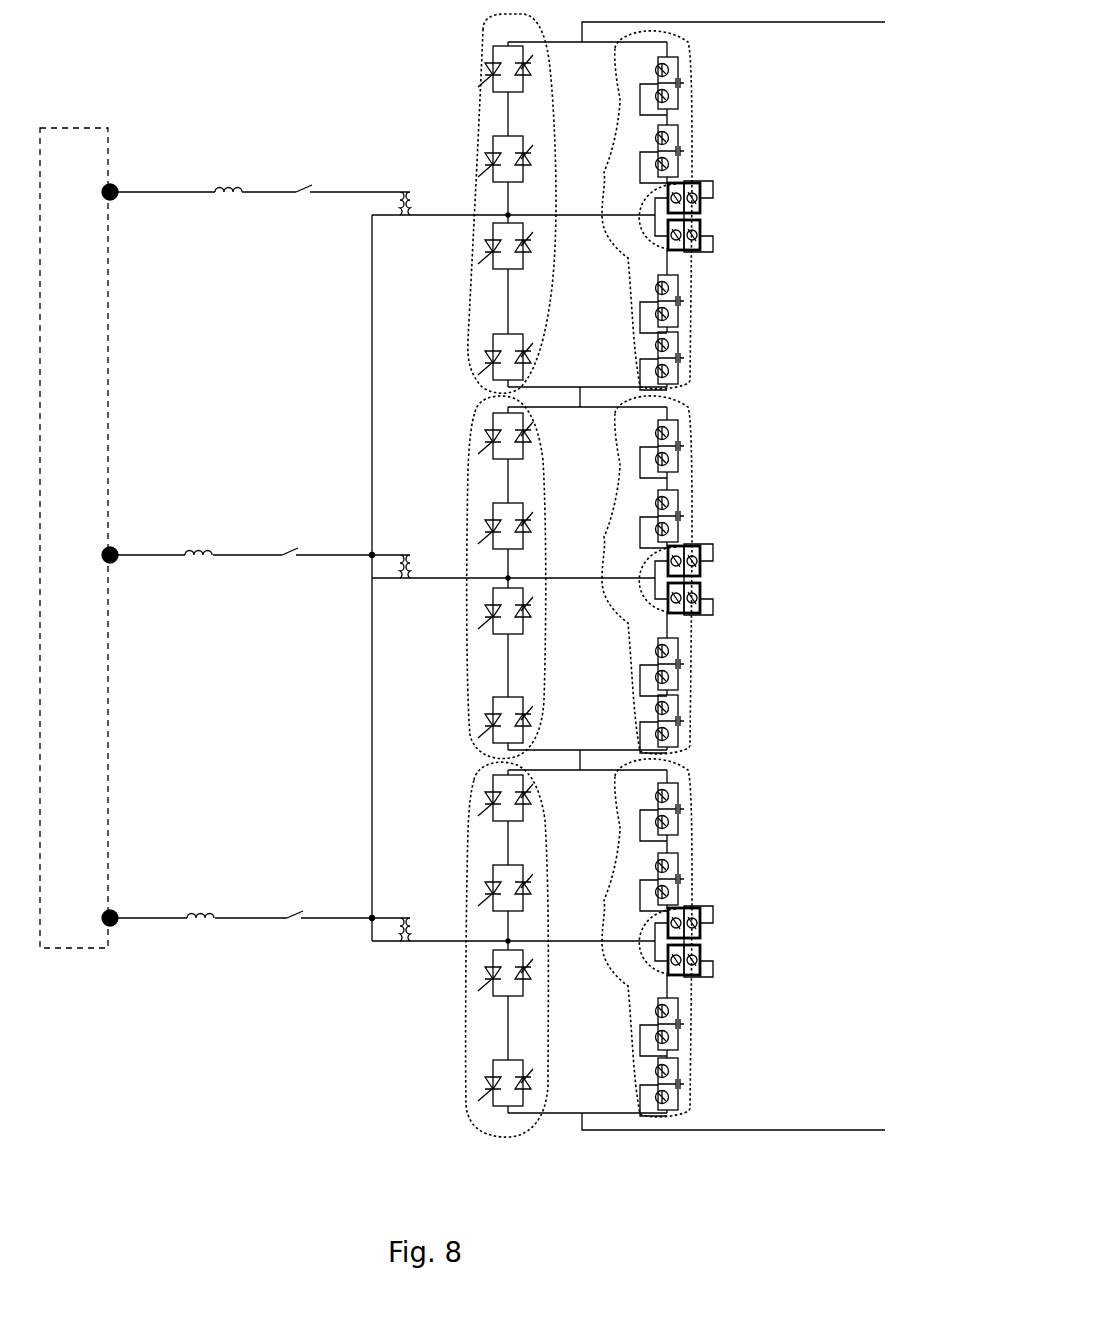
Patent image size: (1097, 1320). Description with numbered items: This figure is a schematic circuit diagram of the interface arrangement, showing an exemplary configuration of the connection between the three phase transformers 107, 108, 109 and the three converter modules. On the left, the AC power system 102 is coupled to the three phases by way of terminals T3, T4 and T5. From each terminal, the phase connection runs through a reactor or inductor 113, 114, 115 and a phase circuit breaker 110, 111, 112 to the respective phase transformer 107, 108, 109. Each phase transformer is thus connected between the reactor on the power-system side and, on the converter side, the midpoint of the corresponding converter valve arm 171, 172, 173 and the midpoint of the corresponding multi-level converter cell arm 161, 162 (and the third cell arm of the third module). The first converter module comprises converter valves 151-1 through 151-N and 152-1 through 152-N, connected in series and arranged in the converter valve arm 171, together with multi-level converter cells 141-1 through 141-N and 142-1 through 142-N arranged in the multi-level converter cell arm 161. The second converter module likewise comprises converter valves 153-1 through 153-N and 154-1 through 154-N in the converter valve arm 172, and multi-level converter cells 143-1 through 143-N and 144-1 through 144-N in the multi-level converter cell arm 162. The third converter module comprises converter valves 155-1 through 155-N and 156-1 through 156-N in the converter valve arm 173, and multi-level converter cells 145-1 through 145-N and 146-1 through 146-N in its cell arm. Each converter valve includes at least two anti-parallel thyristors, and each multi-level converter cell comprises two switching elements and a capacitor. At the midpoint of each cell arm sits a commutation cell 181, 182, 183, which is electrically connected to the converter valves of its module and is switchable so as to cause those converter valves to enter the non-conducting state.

The AC power system 102 is at (75, 128).
The phase transformer 107 is at (407, 186).
The phase transformer 108 is at (402, 550).
The phase transformer 109 is at (405, 912).
The phase circuit breaker 110 is at (307, 175).
The phase circuit breaker 111 is at (302, 539).
The phase circuit breaker 112 is at (308, 900).
The reactor or inductor 113 is at (228, 175).
The reactor or inductor 114 is at (203, 539).
The reactor or inductor 115 is at (205, 900).
The multi-level converter cell 141-N is at (703, 86).
The multi-level converter cell 141-1 is at (706, 154).
The multi-level converter cell 142-N is at (704, 304).
The multi-level converter cell 142-1 is at (696, 361).
The multi-level converter cell 143-N is at (703, 449).
The multi-level converter cell 143-1 is at (700, 519).
The multi-level converter cell 144-N is at (698, 667).
The multi-level converter cell 144-1 is at (697, 724).
The multi-level converter cell 145-N is at (708, 812).
The multi-level converter cell 145-1 is at (706, 882).
The multi-level converter cell 146-N is at (690, 1027).
The multi-level converter cell 146-1 is at (702, 1087).
The converter valve 151-N is at (468, 69).
The converter valve 151-1 is at (475, 158).
The converter valve 152-N is at (463, 246).
The converter valve 152-1 is at (466, 357).
The converter valve 153-N is at (466, 436).
The converter valve 153-1 is at (475, 521).
The converter valve 154-N is at (467, 611).
The converter valve 154-1 is at (470, 720).
The converter valve 155-N is at (466, 798).
The converter valve 155-1 is at (471, 883).
The converter valve 156-N is at (460, 973).
The converter valve 156-1 is at (465, 1083).
The multi-level converter cell arm 161 is at (692, 56).
The multi-level converter cell arm 162 is at (692, 413).
The converter valve arm 171 is at (483, 30).
The converter valve arm 172 is at (470, 661).
The converter valve arm 173 is at (462, 1029).
The commutation cell 181 is at (696, 216).
The commutation cell 182 is at (695, 579).
The commutation cell 183 is at (695, 941).
The terminal T3 is at (127, 172).
The terminal T4 is at (128, 535).
The terminal T5 is at (128, 899).